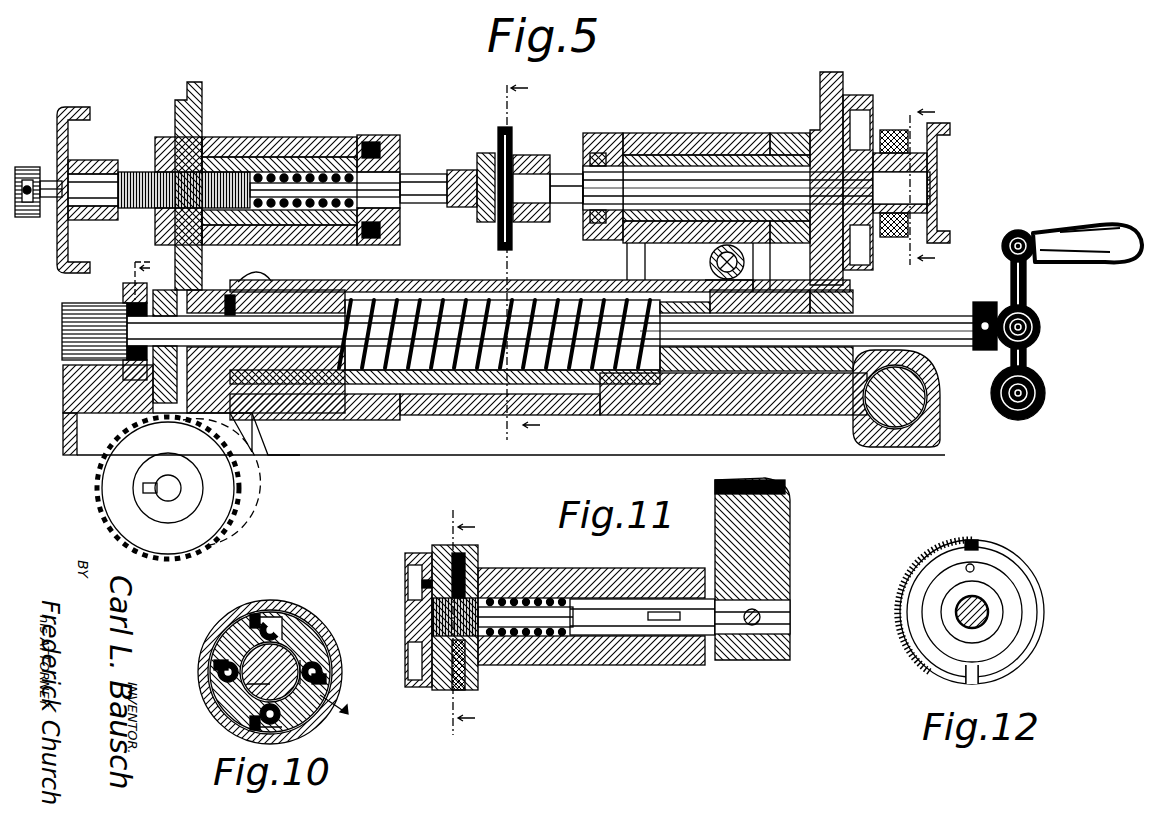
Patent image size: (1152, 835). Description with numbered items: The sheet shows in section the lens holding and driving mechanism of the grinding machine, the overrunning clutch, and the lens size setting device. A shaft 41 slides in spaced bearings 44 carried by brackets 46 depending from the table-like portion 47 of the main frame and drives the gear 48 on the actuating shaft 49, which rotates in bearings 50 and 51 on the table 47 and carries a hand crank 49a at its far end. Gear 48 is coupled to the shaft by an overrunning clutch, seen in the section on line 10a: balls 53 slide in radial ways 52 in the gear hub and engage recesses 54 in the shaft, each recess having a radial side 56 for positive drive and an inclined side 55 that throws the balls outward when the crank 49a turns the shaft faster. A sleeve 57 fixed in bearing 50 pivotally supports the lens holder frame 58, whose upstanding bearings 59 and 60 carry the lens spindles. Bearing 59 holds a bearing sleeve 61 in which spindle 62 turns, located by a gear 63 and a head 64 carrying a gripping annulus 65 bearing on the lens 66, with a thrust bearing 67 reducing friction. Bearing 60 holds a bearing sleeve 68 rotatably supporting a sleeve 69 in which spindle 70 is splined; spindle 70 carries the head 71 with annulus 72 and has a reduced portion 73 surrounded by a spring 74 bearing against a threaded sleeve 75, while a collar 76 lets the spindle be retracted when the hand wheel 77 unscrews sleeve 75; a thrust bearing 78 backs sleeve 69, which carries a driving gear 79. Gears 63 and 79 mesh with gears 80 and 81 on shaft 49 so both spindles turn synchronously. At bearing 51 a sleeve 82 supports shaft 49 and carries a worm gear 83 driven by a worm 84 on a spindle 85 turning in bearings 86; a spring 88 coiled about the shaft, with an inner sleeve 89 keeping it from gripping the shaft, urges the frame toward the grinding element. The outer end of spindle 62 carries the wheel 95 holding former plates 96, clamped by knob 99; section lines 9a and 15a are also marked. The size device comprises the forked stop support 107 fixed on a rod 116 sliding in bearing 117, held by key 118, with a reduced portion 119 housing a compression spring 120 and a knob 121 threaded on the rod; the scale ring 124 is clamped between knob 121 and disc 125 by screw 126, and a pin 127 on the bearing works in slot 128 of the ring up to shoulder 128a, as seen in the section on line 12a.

In FIG. 5, the shaft 41 is at (170, 500).
In FIG. 5, the spaced bearings 44 is at (97, 484).
In FIG. 5, the brackets 46 is at (252, 452).
In FIG. 5, the table-like portion 47 is at (372, 420).
In FIG. 5, the gear 48 is at (150, 258).
In FIG. 5, the actuating shaft 49 is at (65, 306).
In FIG. 10, the actuating shaft 49 is at (347, 709).
In FIG. 5, the hand crank 49a is at (1092, 262).
In FIG. 5, the bearing 50 is at (238, 282).
In FIG. 5, the bearing 51 is at (802, 286).
In FIG. 10, the radial bores or ways 52 is at (300, 620).
In FIG. 5, the balls 53 is at (80, 386).
In FIG. 10, the balls 53 is at (275, 612).
In FIG. 5, the recesses 54 is at (125, 295).
In FIG. 10, the recesses 54 is at (312, 640).
In FIG. 10, the inclined side 55 is at (322, 655).
In FIG. 10, the radial side 56 is at (218, 648).
In FIG. 5, the sleeve 57 is at (275, 290).
In FIG. 5, the lens holder frame or carriage 58 is at (440, 282).
In FIG. 5, the bearing 59 is at (690, 140).
In FIG. 5, the bearing 60 is at (322, 147).
In FIG. 5, the bearing sleeve 61 is at (720, 157).
In FIG. 5, the right hand spindle 62 is at (790, 150).
In FIG. 5, the gear 63 is at (824, 82).
In FIG. 5, the face plate or head 64 is at (600, 140).
In FIG. 5, the annulus 65 is at (535, 158).
In FIG. 5, the lens 66 is at (504, 127).
In FIG. 5, the thrust bearing 67 is at (598, 153).
In FIG. 5, the bearing sleeve 68 is at (300, 147).
In FIG. 5, the sleeve 69 is at (278, 147).
In FIG. 5, the lens holding spindle 70 is at (425, 175).
In FIG. 5, the face plate or head 71 is at (462, 170).
In FIG. 5, the lens gripping annulus 72 is at (485, 153).
In FIG. 5, the reduced portion 73 is at (370, 142).
In FIG. 5, the spring 74 is at (352, 160).
In FIG. 5, the second sleeve 75 is at (240, 142).
In FIG. 5, the collar 76 is at (29, 168).
In FIG. 5, the hand piece or wheel 77 is at (82, 113).
In FIG. 5, the thrust bearing 78 is at (395, 150).
In FIG. 5, the driving gear 79 is at (190, 92).
In FIG. 5, the gear 80 is at (845, 298).
In FIG. 5, the gear 81 is at (226, 298).
In FIG. 5, the sleeve 82 is at (786, 415).
In FIG. 5, the worm gear 83 is at (756, 284).
In FIG. 5, the worm 84 is at (712, 258).
In FIG. 5, the spindle 85 is at (710, 266).
In FIG. 5, the bearings 86 is at (756, 265).
In FIG. 5, the spring 88 is at (603, 300).
In FIG. 5, the sleeve 89 is at (577, 300).
In FIG. 5, the wheel 95 is at (860, 108).
In FIG. 5, the formers or templet plates 96 is at (892, 133).
In FIG. 5, the knob 99 is at (950, 130).
In FIG. 5, the section line 9a is at (917, 122).
In FIG. 5, the section line 10a is at (136, 274).
In FIG. 11, the section line 12a is at (456, 622).
In FIG. 5, the section line 15a is at (516, 254).
In FIG. 11, the forked support 107 is at (788, 506).
In FIG. 11, the rod 116 is at (785, 603).
In FIG. 11, the bearing 117 is at (656, 666).
In FIG. 11, the key 118 is at (660, 608).
In FIG. 5, the reduced portion 119 is at (893, 440).
In FIG. 11, the reduced portion 119 is at (505, 602).
In FIG. 12, the reduced portion 119 is at (956, 612).
In FIG. 11, the compression spring 120 is at (530, 592).
In FIG. 11, the hand piece or knob 121 is at (410, 578).
In FIG. 12, the hand piece or knob 121 is at (950, 598).
In FIG. 11, the ring 124 is at (442, 550).
In FIG. 12, the ring 124 is at (947, 550).
In FIG. 11, the disc 125 is at (452, 660).
In FIG. 12, the disc 125 is at (932, 572).
In FIG. 11, the screw 126 is at (422, 584).
In FIG. 12, the screw 126 is at (974, 566).
In FIG. 11, the pin 127 is at (470, 553).
In FIG. 12, the pin 127 is at (972, 540).
In FIG. 12, the slot 128 is at (1022, 566).
In FIG. 12, the shoulder 128a is at (985, 672).